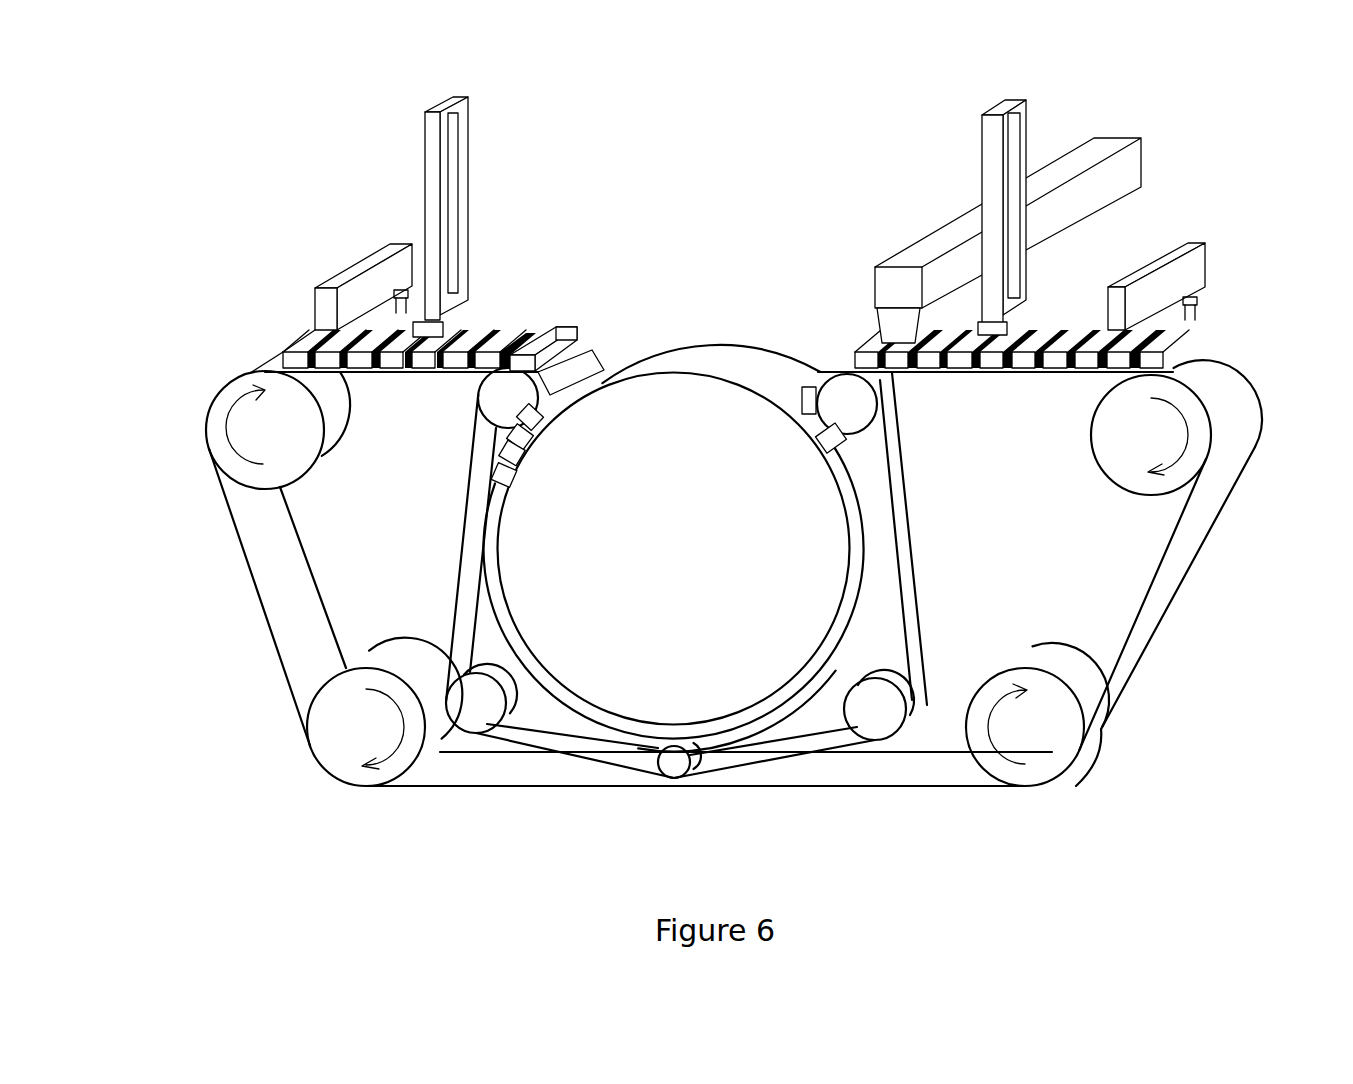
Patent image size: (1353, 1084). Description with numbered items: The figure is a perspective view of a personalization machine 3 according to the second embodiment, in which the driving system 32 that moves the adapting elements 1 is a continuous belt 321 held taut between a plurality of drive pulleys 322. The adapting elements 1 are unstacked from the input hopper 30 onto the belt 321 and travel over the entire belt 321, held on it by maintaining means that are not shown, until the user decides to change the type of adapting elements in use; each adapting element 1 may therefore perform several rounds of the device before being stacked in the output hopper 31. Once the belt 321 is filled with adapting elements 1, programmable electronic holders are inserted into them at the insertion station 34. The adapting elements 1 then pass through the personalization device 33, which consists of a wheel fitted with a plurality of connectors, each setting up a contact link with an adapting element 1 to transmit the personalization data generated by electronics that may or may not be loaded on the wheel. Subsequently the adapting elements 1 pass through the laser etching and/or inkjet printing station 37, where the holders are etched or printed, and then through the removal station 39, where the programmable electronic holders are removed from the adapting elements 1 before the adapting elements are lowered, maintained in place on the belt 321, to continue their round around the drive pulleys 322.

The personalization machine 3 is at (205, 186).
The adapting element 1 is at (542, 337).
The input hopper 30 is at (452, 195).
The output hopper 31 is at (1012, 150).
The driving system 32 is at (356, 557).
The continuous belt 321 is at (1163, 606).
The drive pulley 322 is at (252, 427).
The personalization device 33 is at (706, 622).
The insertion station 34 is at (352, 292).
The laser etching and/or inkjet printing station 37 is at (925, 248).
The removal station 39 is at (1178, 273).